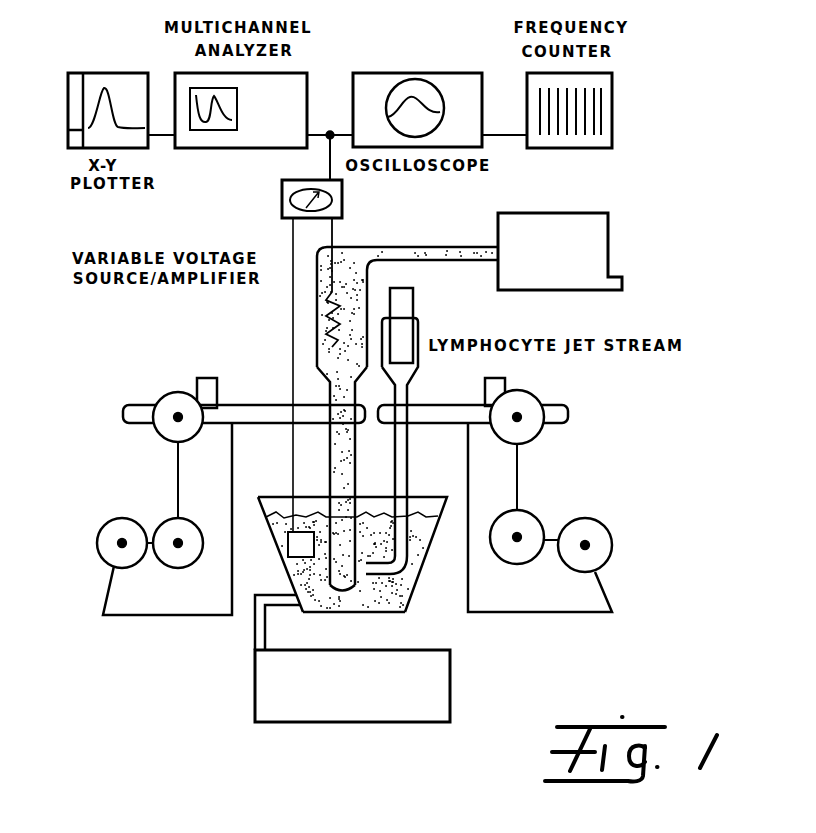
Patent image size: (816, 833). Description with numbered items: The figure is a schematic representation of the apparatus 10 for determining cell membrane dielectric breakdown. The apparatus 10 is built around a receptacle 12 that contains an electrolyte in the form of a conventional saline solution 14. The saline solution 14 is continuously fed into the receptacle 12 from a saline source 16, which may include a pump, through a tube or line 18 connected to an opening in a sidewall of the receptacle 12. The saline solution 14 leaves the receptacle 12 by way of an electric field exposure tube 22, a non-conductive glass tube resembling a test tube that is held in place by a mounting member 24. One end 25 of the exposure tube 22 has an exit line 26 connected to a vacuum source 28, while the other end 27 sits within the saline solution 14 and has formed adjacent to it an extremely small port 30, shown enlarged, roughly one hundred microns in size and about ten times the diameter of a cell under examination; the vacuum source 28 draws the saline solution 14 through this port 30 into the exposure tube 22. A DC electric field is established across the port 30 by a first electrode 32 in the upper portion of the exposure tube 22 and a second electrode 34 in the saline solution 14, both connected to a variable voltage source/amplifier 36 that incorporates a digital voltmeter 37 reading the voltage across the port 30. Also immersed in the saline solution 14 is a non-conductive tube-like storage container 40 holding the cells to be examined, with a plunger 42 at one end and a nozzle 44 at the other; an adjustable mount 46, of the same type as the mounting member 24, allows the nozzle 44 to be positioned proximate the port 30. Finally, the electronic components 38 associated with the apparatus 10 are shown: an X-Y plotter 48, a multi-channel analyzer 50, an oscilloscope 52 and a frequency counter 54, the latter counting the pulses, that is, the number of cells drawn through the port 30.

The apparatus 10 is at (163, 368).
The receptacle 12 is at (410, 608).
The saline solution 14 is at (350, 607).
The saline source 16 is at (453, 690).
The tube or line 18 is at (255, 627).
The electric field exposure tube 22 is at (330, 485).
The mounting member 24 is at (175, 600).
The one end of tube 25 is at (350, 233).
The exit line 26 is at (420, 264).
The other end of tube 27 is at (327, 610).
The vacuum source 28 is at (610, 241).
The port 30 is at (352, 568).
The first electrode 32 is at (320, 300).
The second electrode 34 is at (289, 548).
The variable voltage source/amplifier 36 is at (282, 190).
The digital voltmeter 37 is at (342, 204).
The electronic components 38 is at (330, 75).
The tube-like storage container 40 is at (410, 472).
The plunger 42 is at (400, 306).
The nozzle 44 is at (370, 570).
The adjustable mount 46 is at (537, 602).
The X-Y plotter 48 is at (94, 73).
The multi-channel analyzer 50 is at (290, 73).
The oscilloscope 52 is at (400, 73).
The frequency counter 54 is at (612, 96).